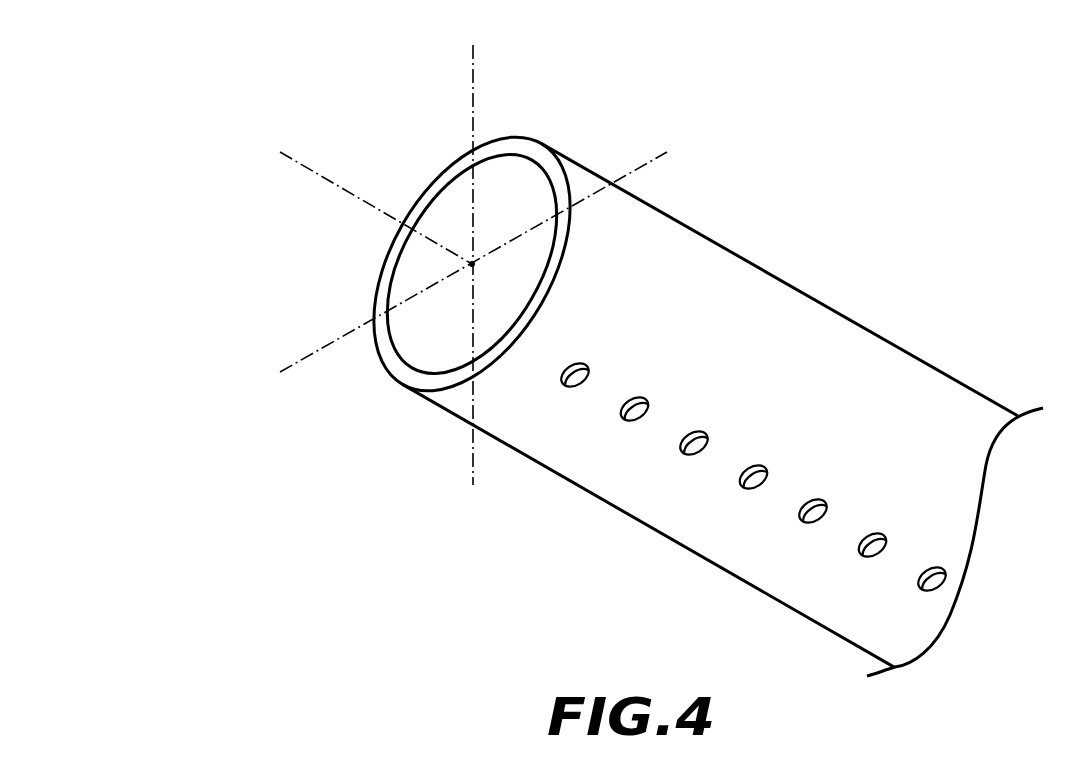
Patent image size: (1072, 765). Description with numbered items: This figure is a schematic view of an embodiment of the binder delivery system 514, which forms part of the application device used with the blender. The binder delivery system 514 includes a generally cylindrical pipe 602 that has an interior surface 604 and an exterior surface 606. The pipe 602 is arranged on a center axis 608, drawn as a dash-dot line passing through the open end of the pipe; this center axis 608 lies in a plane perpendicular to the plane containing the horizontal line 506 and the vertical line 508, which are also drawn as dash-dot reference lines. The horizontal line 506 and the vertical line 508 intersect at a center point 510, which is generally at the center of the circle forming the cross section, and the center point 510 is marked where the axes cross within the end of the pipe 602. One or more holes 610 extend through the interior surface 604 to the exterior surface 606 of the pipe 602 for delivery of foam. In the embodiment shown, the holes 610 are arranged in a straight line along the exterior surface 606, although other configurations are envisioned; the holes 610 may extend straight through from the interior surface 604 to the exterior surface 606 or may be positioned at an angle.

The horizontal line 506 is at (656, 160).
The vertical line 508 is at (472, 468).
The center point 510 is at (473, 262).
The binder delivery system 514 is at (248, 105).
The pipe 602 is at (820, 241).
The interior surface 604 is at (423, 256).
The exterior surface 606 is at (597, 462).
The center axis 608 is at (325, 180).
The holes 610 is at (588, 373).